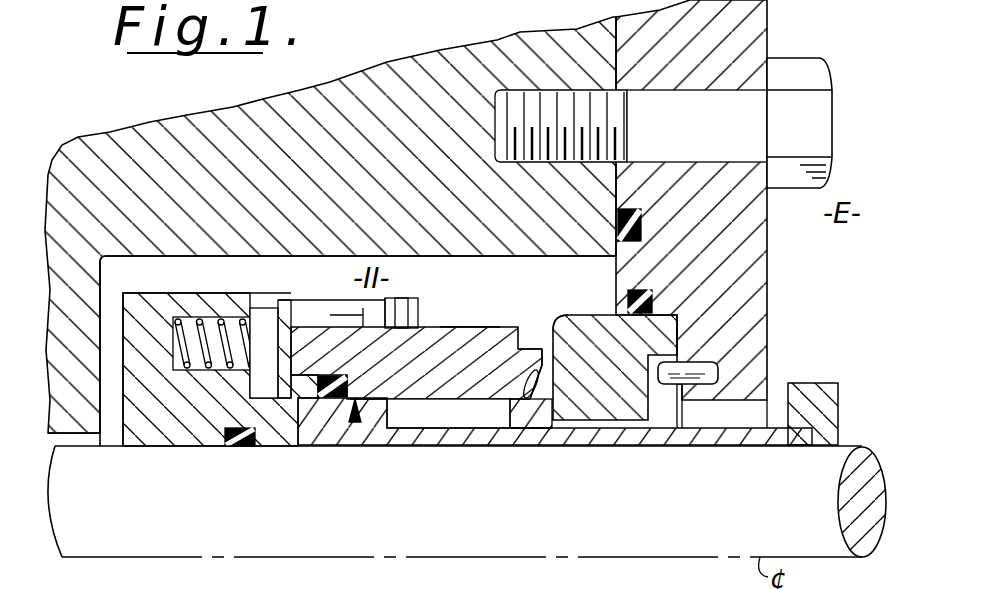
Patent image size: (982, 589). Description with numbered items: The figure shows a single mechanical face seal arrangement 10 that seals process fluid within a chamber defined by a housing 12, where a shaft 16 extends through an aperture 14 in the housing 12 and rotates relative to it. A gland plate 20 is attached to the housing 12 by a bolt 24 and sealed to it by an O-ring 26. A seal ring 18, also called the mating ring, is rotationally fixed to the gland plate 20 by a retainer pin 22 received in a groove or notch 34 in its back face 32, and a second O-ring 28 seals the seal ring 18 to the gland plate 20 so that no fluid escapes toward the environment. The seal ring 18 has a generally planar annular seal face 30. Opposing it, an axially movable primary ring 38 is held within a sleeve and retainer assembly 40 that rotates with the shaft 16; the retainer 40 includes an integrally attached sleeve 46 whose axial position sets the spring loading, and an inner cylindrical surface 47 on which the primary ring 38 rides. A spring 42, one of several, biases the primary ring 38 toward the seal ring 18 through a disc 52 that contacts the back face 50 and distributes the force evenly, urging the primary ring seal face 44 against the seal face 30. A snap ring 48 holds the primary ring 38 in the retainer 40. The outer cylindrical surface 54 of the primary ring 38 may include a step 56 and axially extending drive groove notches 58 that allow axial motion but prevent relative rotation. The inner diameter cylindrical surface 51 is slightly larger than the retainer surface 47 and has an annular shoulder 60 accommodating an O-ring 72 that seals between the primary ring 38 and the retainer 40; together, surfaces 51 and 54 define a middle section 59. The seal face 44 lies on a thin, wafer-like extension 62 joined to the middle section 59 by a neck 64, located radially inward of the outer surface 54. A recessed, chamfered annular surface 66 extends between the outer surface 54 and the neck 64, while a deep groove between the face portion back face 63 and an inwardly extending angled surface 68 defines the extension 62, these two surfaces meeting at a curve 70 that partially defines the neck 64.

The single seal arrangement 10 is at (790, 255).
The housing 12 is at (187, 123).
The aperture 14 is at (77, 437).
The shaft 16 is at (597, 542).
The seal ring 18 is at (605, 413).
The gland plate 20 is at (753, 20).
The retainer pin 22 is at (712, 370).
The bolt 24 is at (830, 122).
The O-ring 26 is at (628, 208).
The second O-ring 28 is at (657, 298).
The seal face 30 is at (545, 400).
The back face 32 is at (677, 327).
The groove or notch 34 is at (662, 407).
The primary ring 38 is at (352, 403).
The sleeve and retainer assembly 40 is at (176, 430).
The spring 42 is at (201, 320).
The seal face of primary ring 44 is at (593, 315).
The sleeve 46 is at (738, 440).
The inner cylindrical surface of retainer 47 is at (251, 395).
The snap ring 48 is at (407, 298).
The back face of primary ring 50 is at (266, 320).
The inner diameter cylindrical surface 51 is at (367, 410).
The disc 52 is at (292, 325).
The outer cylindrical surface 54 is at (470, 327).
The step 56 is at (385, 298).
The drive groove notches 58 is at (335, 326).
The primary ring middle section 59 is at (416, 377).
The annular shoulder 60 is at (285, 437).
The seal face extension 62 is at (527, 400).
The back face of face portion 63 is at (517, 440).
The neck 64 is at (541, 357).
The recessed annular surface 66 is at (533, 349).
The inwardly extending angled surface 68 is at (448, 412).
The curve 70 is at (527, 397).
The O-ring 72 is at (330, 397).